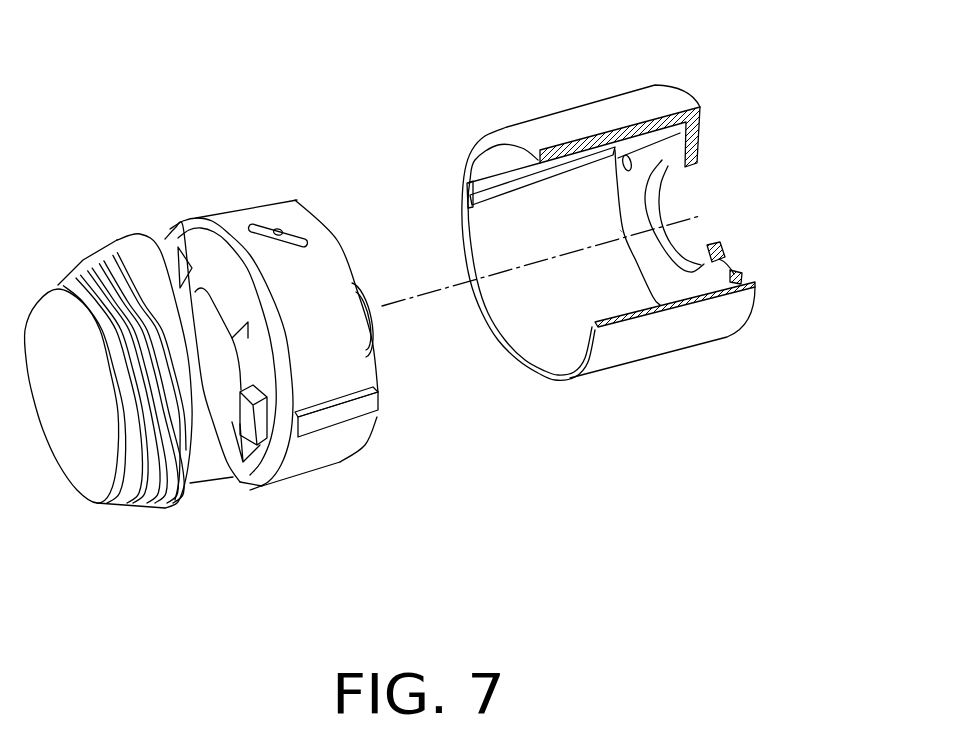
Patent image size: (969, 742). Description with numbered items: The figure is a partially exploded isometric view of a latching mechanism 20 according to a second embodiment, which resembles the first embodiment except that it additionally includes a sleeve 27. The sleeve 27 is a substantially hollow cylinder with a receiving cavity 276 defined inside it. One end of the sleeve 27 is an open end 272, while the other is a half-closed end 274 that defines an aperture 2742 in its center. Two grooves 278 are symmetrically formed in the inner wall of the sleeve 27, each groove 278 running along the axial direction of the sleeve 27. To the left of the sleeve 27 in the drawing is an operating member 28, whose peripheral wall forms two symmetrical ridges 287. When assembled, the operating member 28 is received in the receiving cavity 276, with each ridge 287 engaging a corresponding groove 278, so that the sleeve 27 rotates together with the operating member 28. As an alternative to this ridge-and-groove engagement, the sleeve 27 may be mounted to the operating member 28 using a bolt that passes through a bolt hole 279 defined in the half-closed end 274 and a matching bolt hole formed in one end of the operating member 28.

The latching mechanism 20 is at (398, 56).
The sleeve 27 is at (648, 364).
The open end 272 is at (466, 233).
The half-closed end 274 is at (695, 152).
The aperture 2742 is at (670, 246).
The receiving cavity 276 is at (555, 307).
The groove 278 is at (470, 190).
The bolt hole 279 is at (621, 158).
The operating member 28 is at (277, 218).
The ridge 287 is at (320, 417).